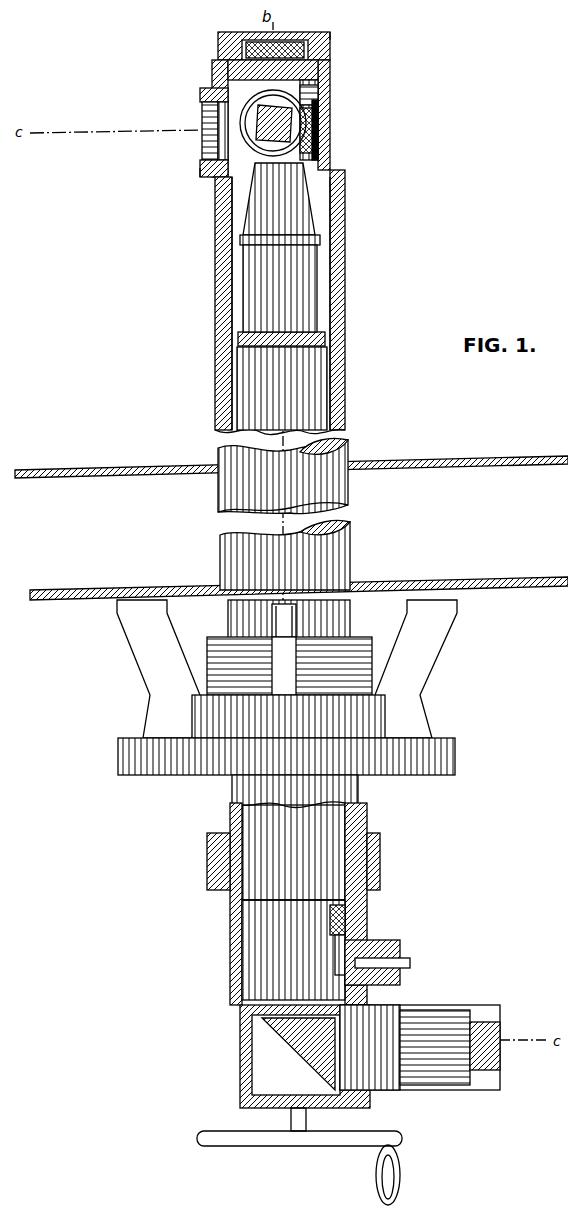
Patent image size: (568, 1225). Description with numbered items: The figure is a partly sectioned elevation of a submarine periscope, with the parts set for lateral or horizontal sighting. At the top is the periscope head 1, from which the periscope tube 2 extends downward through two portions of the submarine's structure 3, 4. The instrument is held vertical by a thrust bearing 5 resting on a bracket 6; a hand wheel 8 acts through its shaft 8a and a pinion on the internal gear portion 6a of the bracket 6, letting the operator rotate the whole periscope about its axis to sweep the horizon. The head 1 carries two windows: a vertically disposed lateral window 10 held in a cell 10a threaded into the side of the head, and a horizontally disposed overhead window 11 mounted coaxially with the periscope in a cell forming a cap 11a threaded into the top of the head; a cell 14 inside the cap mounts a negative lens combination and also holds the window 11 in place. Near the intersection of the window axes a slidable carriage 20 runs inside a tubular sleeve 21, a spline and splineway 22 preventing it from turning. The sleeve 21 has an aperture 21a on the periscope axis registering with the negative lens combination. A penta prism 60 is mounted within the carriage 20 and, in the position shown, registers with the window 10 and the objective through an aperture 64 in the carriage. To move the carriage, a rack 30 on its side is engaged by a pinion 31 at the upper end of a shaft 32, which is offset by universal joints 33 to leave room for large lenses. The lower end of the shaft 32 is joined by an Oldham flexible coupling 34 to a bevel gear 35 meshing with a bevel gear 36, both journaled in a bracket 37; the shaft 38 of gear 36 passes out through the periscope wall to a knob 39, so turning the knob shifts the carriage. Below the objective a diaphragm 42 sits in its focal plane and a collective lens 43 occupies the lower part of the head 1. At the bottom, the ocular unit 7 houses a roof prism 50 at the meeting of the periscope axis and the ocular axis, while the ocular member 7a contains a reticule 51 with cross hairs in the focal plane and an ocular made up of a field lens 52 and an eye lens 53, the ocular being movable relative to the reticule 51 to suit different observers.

The periscope head 1 is at (330, 73).
The periscope tube 2 is at (345, 362).
The submarine structure portion 3 is at (120, 477).
The submarine structure portion 4 is at (528, 581).
The thrust bearing 5 is at (374, 638).
The bracket 6 is at (420, 704).
The internal gear portion 6a is at (286, 766).
The ocular unit 7 is at (240, 1022).
The ocular member 7a is at (445, 1010).
The hand wheel 8 is at (345, 1148).
The shaft 8a is at (290, 1120).
The lateral window 10 is at (204, 112).
The cell 10a is at (168, 196).
The overhead window 11 is at (218, 36).
The cap 11a is at (335, 40).
The cell 14 is at (322, 50).
The slidable carriage 20 is at (165, 72).
The tubular sleeve 21 is at (328, 160).
The aperture 21a is at (202, 152).
The spline and splineway 22 is at (308, 130).
The rack 30 is at (328, 95).
The pinion 31 is at (330, 115).
The shaft 32 is at (330, 398).
The universal joints 33 is at (318, 316).
The flexible coupling 34 is at (293, 904).
The bevel gear 35 is at (338, 955).
The bevel gear 36 is at (352, 972).
The bracket 37 is at (324, 921).
The shaft 38 is at (410, 962).
The knob 39 is at (398, 948).
The diaphragm 42 is at (279, 208).
The collective lens 43 is at (280, 288).
The roof prism 50 is at (298, 1054).
The reticule 51 is at (400, 1090).
The field lens 52 is at (465, 1088).
The eye lens 53 is at (500, 1038).
The penta prism 60 is at (274, 123).
The aperture 64 is at (218, 130).